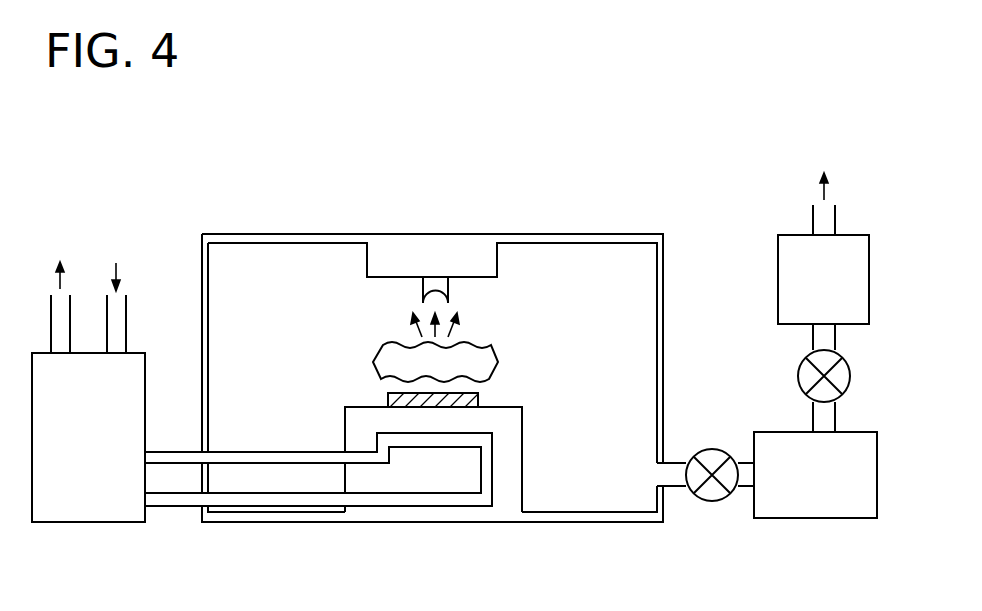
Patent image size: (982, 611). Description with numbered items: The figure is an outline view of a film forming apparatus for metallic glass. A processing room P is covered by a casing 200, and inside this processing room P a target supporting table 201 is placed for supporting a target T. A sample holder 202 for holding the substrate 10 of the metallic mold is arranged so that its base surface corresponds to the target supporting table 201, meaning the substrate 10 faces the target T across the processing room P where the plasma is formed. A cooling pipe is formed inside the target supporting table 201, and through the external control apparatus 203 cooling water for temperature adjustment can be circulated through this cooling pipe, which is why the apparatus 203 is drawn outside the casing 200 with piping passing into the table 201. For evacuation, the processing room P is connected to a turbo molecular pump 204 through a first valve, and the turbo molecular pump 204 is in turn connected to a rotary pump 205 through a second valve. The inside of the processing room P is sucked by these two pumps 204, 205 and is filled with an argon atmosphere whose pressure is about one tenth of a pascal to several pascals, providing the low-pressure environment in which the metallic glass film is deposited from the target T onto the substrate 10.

The casing 200 is at (272, 233).
The sample holder 202 is at (497, 258).
The substrate 10 is at (449, 289).
The processing room P is at (631, 287).
The target T is at (480, 400).
The target supporting table 201 is at (522, 473).
The external control apparatus 203 is at (75, 510).
The turbo molecular pump 204 is at (818, 497).
The rotary pump 205 is at (790, 275).